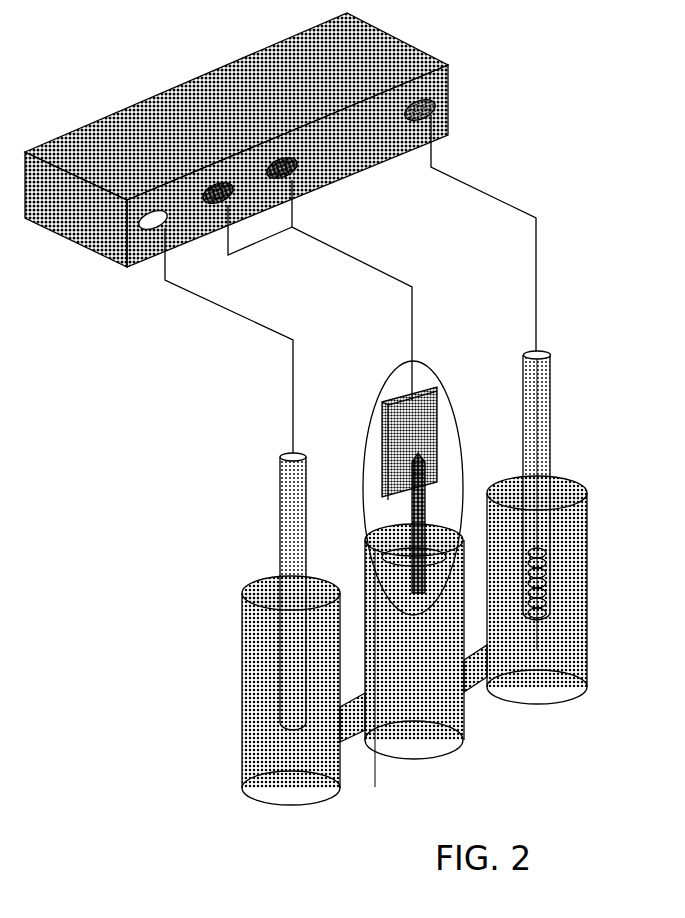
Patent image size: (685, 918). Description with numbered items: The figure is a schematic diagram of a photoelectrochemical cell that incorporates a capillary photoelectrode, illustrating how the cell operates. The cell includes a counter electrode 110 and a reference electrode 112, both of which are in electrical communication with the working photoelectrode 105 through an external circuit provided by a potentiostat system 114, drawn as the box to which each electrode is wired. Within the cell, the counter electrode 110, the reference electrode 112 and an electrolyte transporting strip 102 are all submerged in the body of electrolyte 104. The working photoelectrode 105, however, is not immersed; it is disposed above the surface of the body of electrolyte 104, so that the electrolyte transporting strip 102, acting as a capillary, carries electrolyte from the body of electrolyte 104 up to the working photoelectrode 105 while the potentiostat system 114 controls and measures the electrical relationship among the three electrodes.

The electrolyte transporting strip 102 is at (417, 512).
The body of electrolyte 104 is at (433, 690).
The working photoelectrode 105 is at (424, 480).
The counter electrode 110 is at (547, 425).
The reference electrode 112 is at (283, 527).
The potentiostat system 114 is at (231, 131).